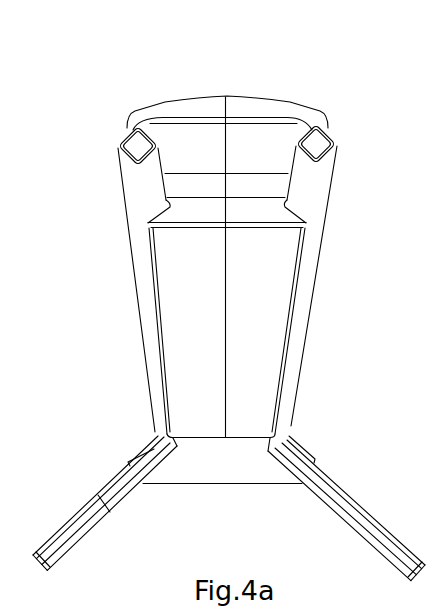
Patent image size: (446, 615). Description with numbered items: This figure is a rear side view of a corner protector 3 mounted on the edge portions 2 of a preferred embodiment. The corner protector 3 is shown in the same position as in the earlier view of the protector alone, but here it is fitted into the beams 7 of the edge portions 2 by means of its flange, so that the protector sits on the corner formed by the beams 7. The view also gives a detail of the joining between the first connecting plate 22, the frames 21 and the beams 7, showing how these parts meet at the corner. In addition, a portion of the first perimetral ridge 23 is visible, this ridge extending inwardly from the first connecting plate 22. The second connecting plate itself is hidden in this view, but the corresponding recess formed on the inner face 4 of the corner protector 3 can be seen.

The edge portions 2 is at (90, 120).
The corner protector 3 is at (279, 88).
The beams 7 is at (137, 183).
The inner face 4 is at (257, 325).
The frames 21 is at (120, 485).
The first connecting plate 22 is at (292, 436).
The first perimetral ridge 23 is at (225, 468).